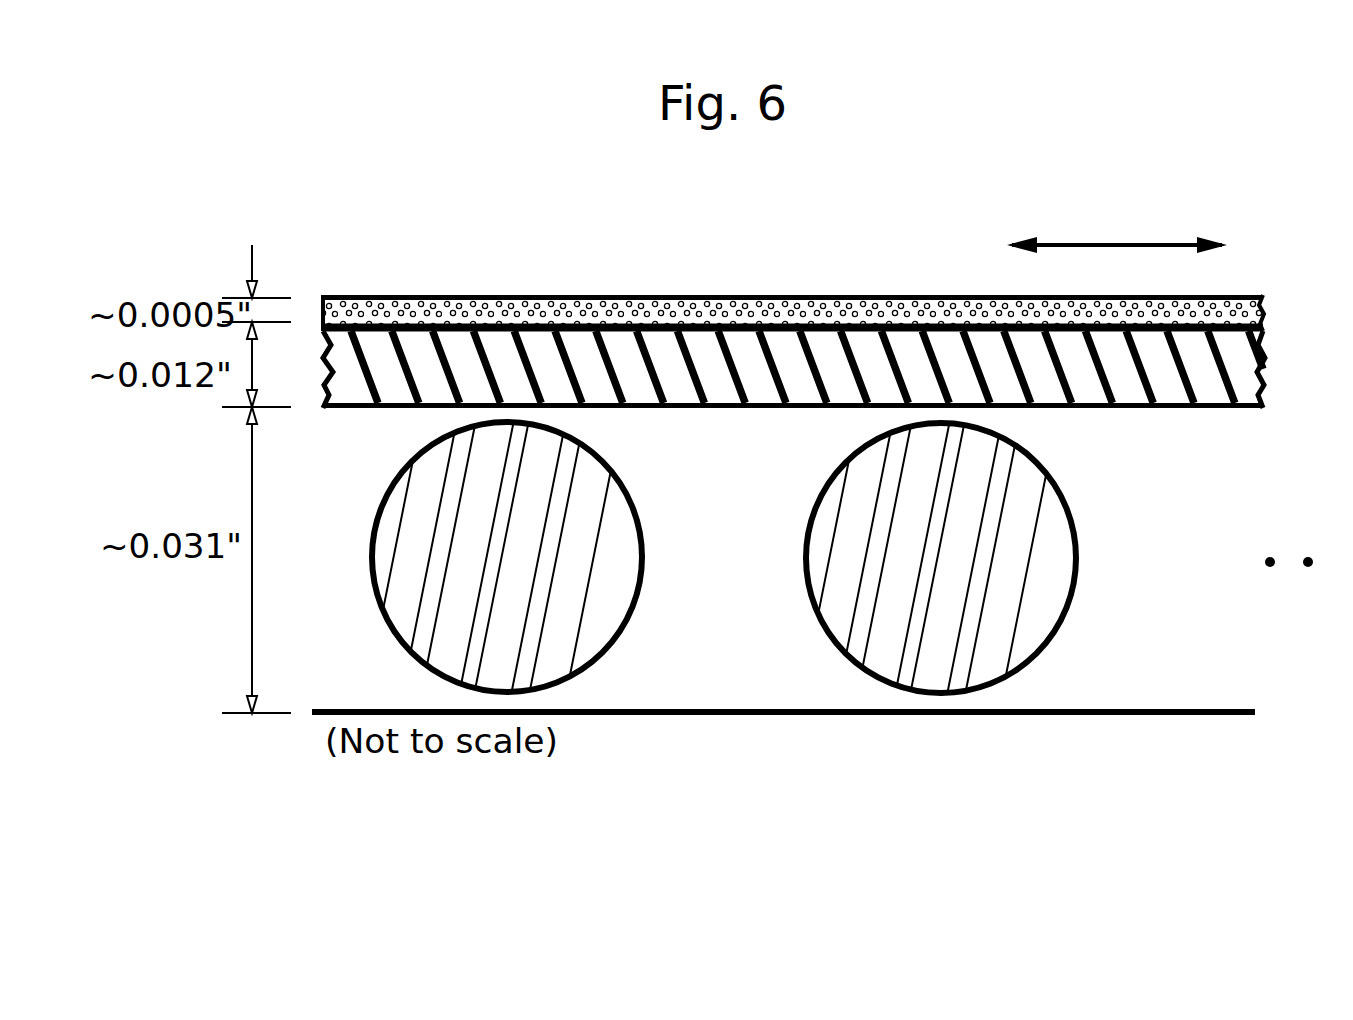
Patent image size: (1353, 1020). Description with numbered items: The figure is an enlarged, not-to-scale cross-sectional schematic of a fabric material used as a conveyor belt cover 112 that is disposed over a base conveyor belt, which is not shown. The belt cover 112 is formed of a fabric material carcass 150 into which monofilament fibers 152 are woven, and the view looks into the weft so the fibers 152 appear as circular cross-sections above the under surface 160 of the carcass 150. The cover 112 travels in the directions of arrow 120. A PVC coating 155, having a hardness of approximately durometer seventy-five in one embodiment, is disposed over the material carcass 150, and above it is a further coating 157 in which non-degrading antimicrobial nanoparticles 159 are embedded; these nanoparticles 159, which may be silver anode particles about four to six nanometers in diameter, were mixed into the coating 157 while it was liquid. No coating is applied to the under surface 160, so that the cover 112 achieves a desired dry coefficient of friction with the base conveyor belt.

The belt cover 112 is at (1170, 789).
The arrow 120 is at (1100, 245).
The fabric material carcass 150 is at (1053, 692).
The monofilament fibers 152 is at (500, 634).
The PVC coating 155 is at (1210, 380).
The coating 157 is at (633, 297).
The non-degrading antimicrobial nanoparticles 159 is at (913, 310).
The under surface 160 is at (680, 712).